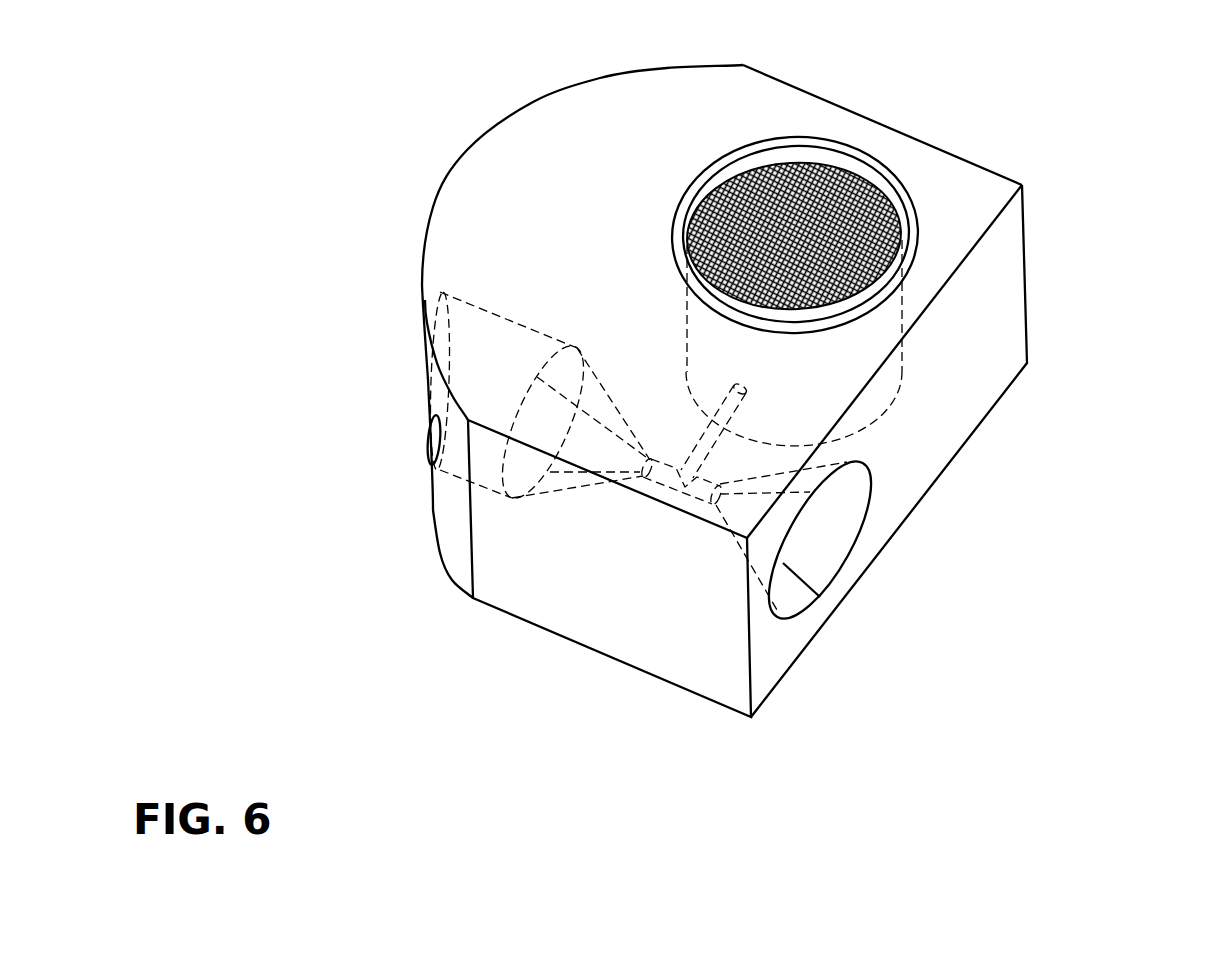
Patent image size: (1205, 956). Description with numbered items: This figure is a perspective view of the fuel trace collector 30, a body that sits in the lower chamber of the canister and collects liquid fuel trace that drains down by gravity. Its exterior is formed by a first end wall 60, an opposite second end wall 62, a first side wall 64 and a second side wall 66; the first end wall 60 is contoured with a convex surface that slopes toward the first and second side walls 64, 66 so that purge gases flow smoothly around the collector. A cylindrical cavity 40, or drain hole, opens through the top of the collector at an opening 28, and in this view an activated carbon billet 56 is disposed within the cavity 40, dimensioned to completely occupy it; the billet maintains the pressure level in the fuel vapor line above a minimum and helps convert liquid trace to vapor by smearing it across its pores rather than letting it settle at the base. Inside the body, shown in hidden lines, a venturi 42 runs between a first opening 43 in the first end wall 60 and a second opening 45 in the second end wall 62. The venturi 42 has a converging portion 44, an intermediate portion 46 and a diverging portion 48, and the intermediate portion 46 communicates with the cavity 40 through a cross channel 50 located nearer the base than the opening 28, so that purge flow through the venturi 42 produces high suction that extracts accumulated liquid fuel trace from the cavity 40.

The opening 28 is at (907, 187).
The fuel trace collector 30 is at (1027, 222).
The cavity 40 is at (905, 297).
The venturi 42 is at (582, 494).
The first opening 43 is at (427, 435).
The converging portion 44 is at (553, 497).
The second opening 45 is at (850, 545).
The intermediate portion 46 is at (663, 487).
The diverging portion 48 is at (757, 573).
The cross channel 50 is at (720, 440).
The carbon billet 56 is at (837, 177).
The first end wall 60 is at (453, 527).
The second end wall 62 is at (957, 410).
The first side wall 64 is at (678, 645).
The second side wall 66 is at (990, 168).